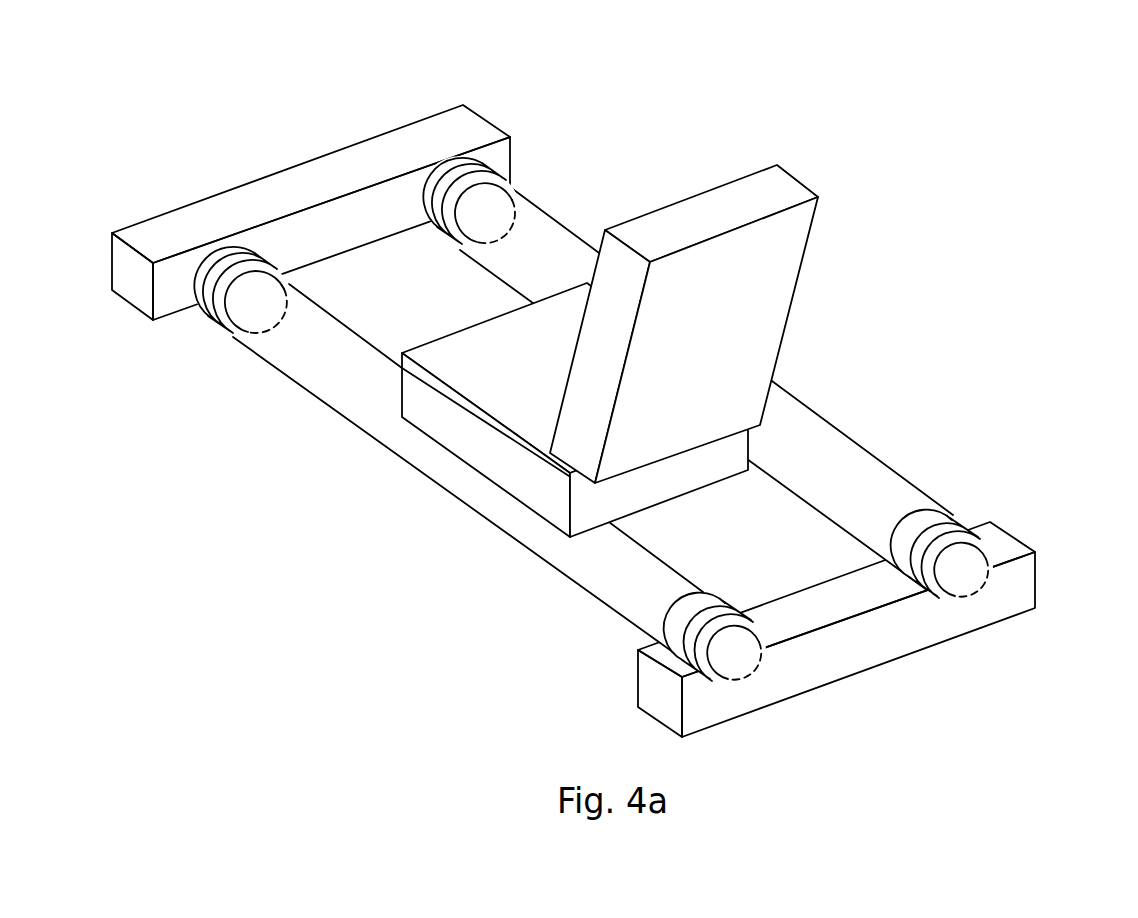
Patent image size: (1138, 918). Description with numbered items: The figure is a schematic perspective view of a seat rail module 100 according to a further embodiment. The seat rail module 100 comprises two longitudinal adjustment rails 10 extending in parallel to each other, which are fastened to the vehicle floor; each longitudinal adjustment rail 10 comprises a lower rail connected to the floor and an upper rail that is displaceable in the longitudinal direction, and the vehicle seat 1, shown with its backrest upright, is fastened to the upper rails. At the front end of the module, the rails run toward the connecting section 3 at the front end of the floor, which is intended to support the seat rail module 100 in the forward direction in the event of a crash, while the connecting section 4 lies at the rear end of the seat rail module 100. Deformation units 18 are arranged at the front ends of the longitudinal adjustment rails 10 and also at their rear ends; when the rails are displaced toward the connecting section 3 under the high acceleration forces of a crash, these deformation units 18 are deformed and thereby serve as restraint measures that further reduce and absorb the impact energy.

The seat rail module 100 is at (161, 57).
The vehicle seat 1 is at (787, 272).
The connecting section at front end of floor 3 is at (415, 146).
The connecting section at rear end of seat rail module 4 is at (1010, 547).
The longitudinal adjustment rail 10 is at (828, 457).
The deformation unit 18 is at (468, 180).